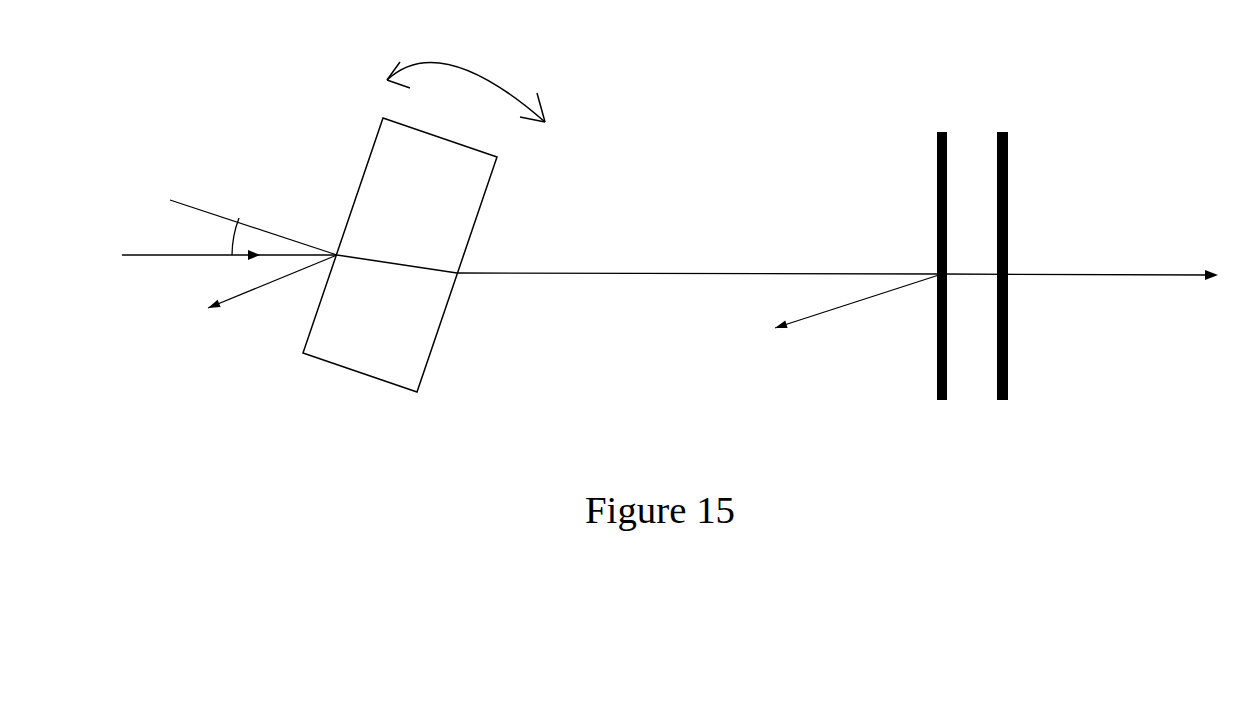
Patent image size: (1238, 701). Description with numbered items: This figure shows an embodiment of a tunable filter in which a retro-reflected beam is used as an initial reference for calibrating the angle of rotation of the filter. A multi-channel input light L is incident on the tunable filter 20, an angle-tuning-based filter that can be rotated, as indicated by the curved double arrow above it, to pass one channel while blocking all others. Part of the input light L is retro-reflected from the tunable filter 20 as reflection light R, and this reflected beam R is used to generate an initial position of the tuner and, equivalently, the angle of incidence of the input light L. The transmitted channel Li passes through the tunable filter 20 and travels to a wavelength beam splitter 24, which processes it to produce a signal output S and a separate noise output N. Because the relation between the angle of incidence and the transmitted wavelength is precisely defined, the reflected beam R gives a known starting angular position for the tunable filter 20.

The tunable filter 20 is at (488, 185).
The wavelength beam splitter 24 is at (1008, 180).
The input light L is at (150, 258).
The retro-reflection light R is at (232, 302).
The transmitted channel Li is at (738, 273).
The signal output S is at (820, 317).
The noise output N is at (1135, 274).